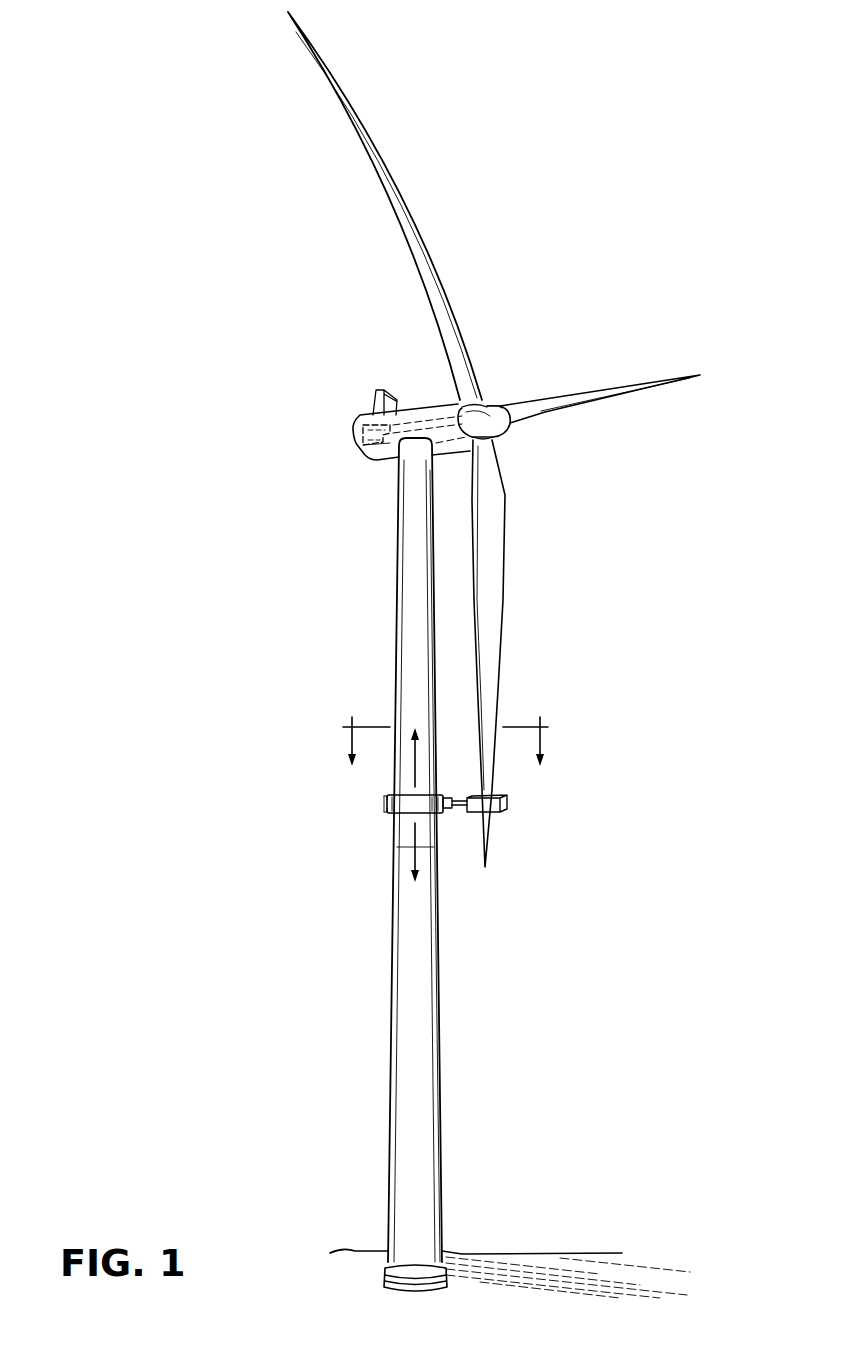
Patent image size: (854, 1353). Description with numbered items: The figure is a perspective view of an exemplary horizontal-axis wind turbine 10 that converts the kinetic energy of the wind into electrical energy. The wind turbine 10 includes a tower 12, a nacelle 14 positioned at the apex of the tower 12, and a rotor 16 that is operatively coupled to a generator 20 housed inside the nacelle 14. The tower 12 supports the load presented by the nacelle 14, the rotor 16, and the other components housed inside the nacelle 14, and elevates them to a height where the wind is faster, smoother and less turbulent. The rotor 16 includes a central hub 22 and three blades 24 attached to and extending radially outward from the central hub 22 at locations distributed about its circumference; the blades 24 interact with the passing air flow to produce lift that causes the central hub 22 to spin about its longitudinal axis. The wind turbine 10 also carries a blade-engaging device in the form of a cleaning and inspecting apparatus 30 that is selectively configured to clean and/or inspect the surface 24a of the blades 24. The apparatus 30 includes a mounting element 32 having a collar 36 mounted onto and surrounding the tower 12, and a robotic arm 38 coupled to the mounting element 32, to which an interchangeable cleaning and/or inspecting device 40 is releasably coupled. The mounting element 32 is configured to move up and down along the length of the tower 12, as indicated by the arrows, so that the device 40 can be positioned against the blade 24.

The wind turbine 10 is at (590, 229).
The tower 12 is at (392, 654).
The nacelle 14 is at (356, 413).
The rotor 16 is at (513, 438).
The generator 20 is at (366, 447).
The central hub 22 is at (497, 406).
The blade 24 is at (401, 210).
The surface of the blade 24a is at (498, 644).
The cleaning and inspecting apparatus 30 is at (334, 803).
The mounting element 32 is at (381, 799).
The collar 36 is at (392, 813).
The robotic arm 38 is at (460, 813).
The cleaning and/or inspecting device 40 is at (509, 803).